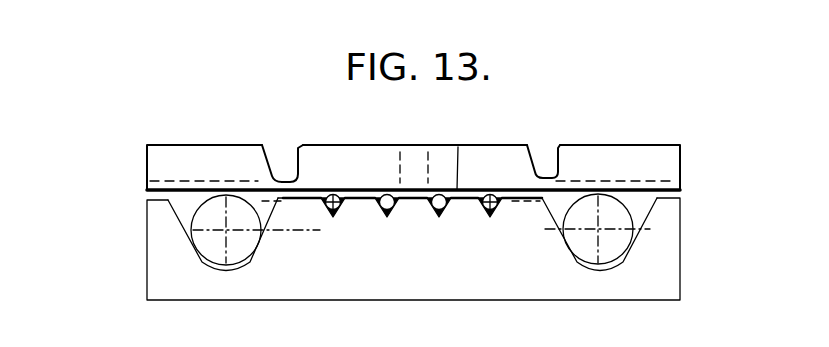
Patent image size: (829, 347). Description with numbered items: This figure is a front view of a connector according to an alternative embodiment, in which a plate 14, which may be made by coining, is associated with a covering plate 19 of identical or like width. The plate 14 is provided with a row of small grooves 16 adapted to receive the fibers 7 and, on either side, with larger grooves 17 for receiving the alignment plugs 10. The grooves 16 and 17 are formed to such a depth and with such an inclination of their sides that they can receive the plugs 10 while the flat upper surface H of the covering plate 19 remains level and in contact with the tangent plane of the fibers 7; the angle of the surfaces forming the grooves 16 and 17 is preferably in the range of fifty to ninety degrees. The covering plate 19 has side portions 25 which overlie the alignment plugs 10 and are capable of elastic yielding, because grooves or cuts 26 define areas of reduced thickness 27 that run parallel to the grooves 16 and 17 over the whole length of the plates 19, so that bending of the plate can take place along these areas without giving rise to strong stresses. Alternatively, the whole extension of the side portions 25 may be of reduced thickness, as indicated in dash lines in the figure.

The alignment plug 10 is at (623, 243).
The plate 14 is at (150, 257).
The covering plate 19 is at (148, 162).
The side portion 25 is at (177, 157).
The groove or cut 26 is at (278, 170).
The area of reduced thickness 27 is at (262, 152).
The groove for receiving alignment plug 17 is at (272, 218).
The groove adapted to receive fiber 16 is at (433, 211).
The fiber 7 is at (480, 207).
The gap G is at (458, 147).
The flat surface H is at (522, 200).